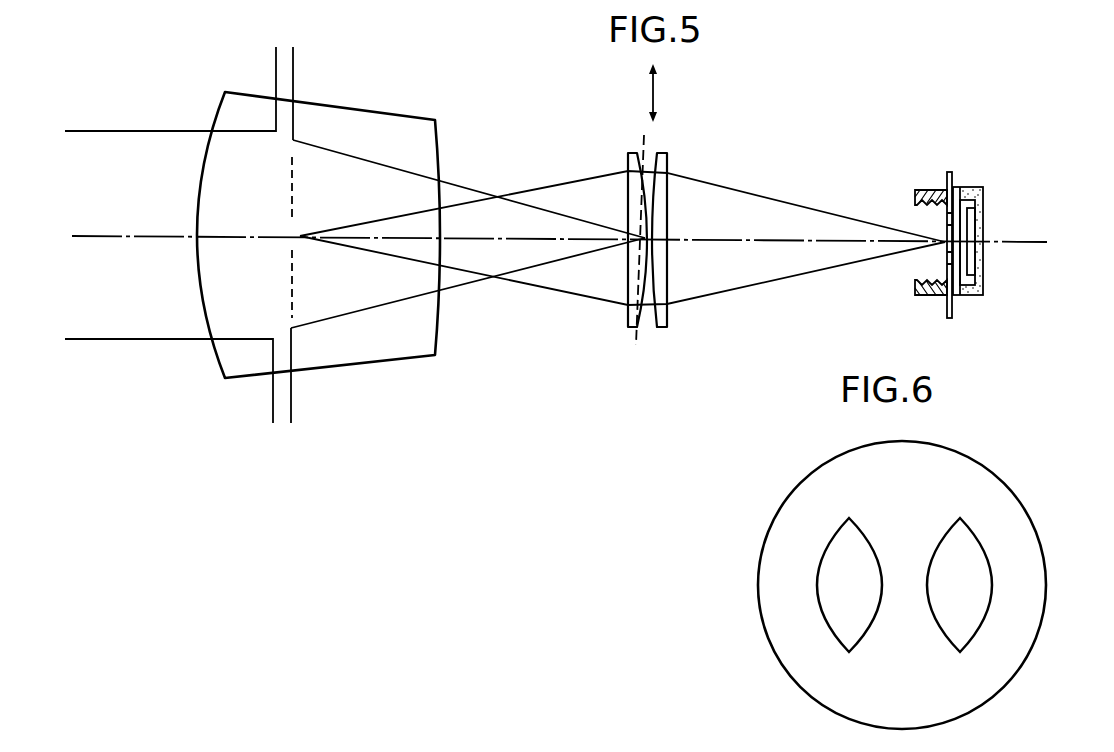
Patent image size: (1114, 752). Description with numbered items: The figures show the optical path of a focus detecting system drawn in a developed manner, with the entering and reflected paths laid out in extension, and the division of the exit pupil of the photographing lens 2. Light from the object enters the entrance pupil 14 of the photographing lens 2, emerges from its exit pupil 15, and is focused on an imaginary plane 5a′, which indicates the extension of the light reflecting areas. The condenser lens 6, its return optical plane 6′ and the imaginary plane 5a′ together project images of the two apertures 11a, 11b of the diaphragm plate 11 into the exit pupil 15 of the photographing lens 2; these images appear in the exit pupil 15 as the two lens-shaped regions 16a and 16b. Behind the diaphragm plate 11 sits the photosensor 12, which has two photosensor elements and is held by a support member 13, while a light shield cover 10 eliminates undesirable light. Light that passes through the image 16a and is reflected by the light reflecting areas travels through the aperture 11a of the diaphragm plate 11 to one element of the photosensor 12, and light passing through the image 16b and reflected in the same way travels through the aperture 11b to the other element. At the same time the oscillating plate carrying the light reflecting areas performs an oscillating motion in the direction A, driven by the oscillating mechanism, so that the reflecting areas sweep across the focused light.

In FIG. 5, the photographing lens 2 is at (403, 350).
In FIG. 5, the entrance pupil 14 is at (262, 332).
In FIG. 5, the exit pupil 15 is at (296, 322).
In FIG. 6, the exit pupil 15 is at (1018, 483).
In FIG. 5, the image of aperture 16a is at (290, 275).
In FIG. 6, the image of aperture 16a is at (983, 625).
In FIG. 5, the image of aperture 16b is at (290, 178).
In FIG. 6, the image of aperture 16b is at (858, 525).
In FIG. 5, the condenser lens 6 is at (627, 312).
In FIG. 5, the return optical plane 6′ is at (670, 314).
In FIG. 5, the imaginary plane 5a′ is at (637, 342).
In FIG. 5, the oscillating direction A is at (664, 93).
In FIG. 5, the light shield cover 10 is at (925, 190).
In FIG. 5, the diaphragm plate 11 is at (949, 172).
In FIG. 5, the aperture 11a is at (947, 225).
In FIG. 5, the aperture 11b is at (947, 260).
In FIG. 5, the photosensor 12 is at (982, 267).
In FIG. 5, the support member 13 is at (977, 190).